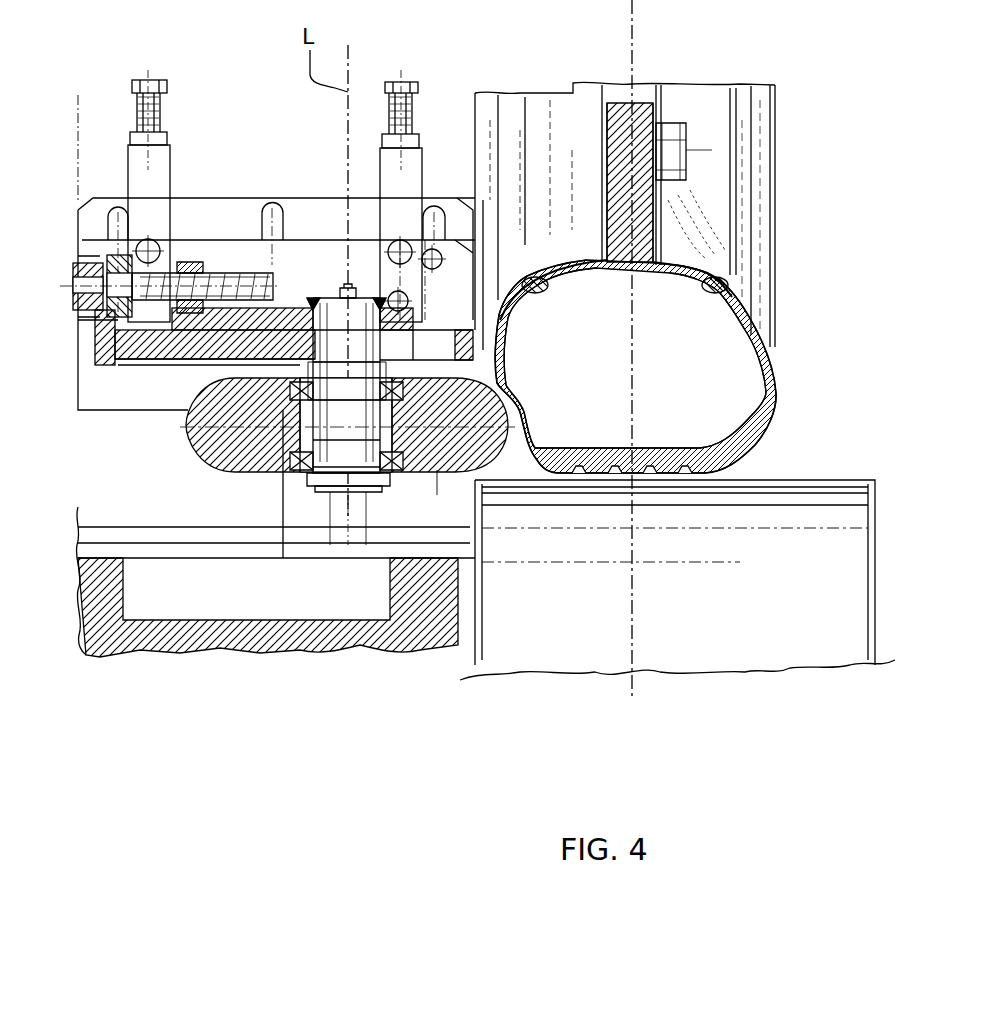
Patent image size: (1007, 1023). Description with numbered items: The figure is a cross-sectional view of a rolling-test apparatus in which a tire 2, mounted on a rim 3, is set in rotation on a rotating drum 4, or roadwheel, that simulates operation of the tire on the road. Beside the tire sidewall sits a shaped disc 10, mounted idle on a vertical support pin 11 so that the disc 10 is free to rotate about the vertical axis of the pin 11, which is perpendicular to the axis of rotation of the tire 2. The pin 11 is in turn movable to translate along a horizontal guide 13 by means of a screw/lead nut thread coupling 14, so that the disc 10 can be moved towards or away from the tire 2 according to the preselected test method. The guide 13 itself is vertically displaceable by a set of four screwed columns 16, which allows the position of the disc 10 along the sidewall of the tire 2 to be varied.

The tire 2 is at (788, 345).
The rim 3 is at (632, 105).
The rotating drum 4 is at (796, 540).
The shaped disc 10 is at (210, 445).
The vertical support pin 11 is at (360, 462).
The horizontal guide 13 is at (473, 343).
The screw/lead nut thread coupling 14 is at (232, 268).
The screwed columns 16 is at (128, 160).